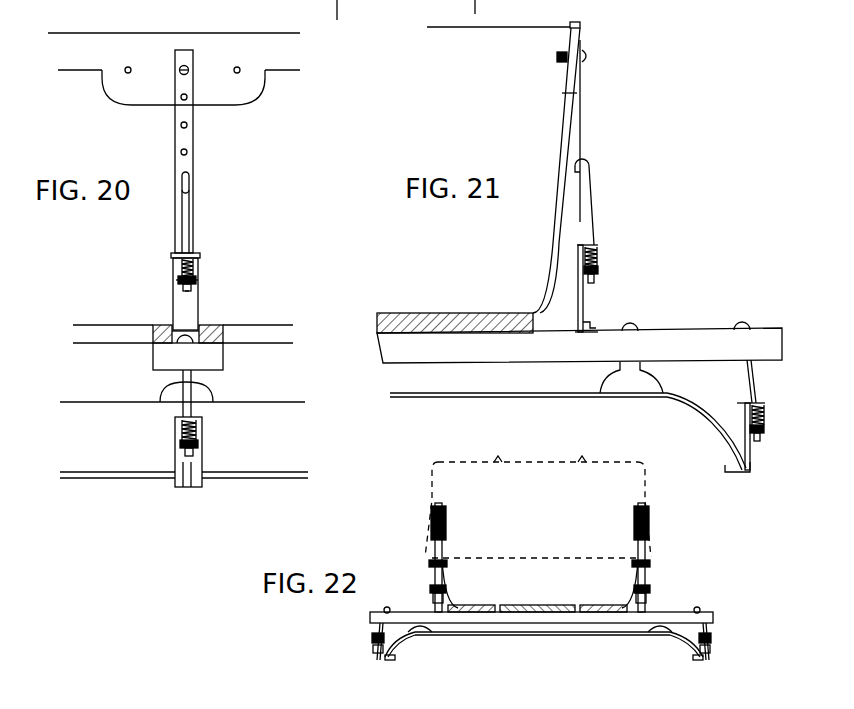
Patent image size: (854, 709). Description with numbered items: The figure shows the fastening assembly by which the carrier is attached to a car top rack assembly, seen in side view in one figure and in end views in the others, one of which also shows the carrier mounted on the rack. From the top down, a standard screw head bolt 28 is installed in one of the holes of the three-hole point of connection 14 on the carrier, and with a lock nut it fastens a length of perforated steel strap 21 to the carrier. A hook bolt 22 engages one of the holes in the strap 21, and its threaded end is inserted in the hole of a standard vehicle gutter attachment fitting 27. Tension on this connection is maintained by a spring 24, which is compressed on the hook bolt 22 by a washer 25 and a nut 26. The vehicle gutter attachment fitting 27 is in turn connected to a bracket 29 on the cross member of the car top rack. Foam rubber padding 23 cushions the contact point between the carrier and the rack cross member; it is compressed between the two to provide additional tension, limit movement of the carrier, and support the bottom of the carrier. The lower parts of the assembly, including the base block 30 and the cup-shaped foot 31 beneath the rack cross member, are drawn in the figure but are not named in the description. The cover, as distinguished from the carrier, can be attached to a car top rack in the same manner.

The three-hole accommodation 14 is at (179, 72).
The perforated steel strap 21 is at (196, 127).
The hook bolt 22 is at (192, 212).
The foam rubber padding 23 is at (224, 323).
The spring 24 is at (192, 263).
The washer 25 is at (198, 277).
The nut 26 is at (198, 282).
The vehicle gutter attachment fitting 27 is at (198, 311).
The screw head bolt 28 is at (196, 65).
The bracket 29 is at (222, 332).
The base block 30 is at (207, 358).
The cup foot 31 is at (204, 392).